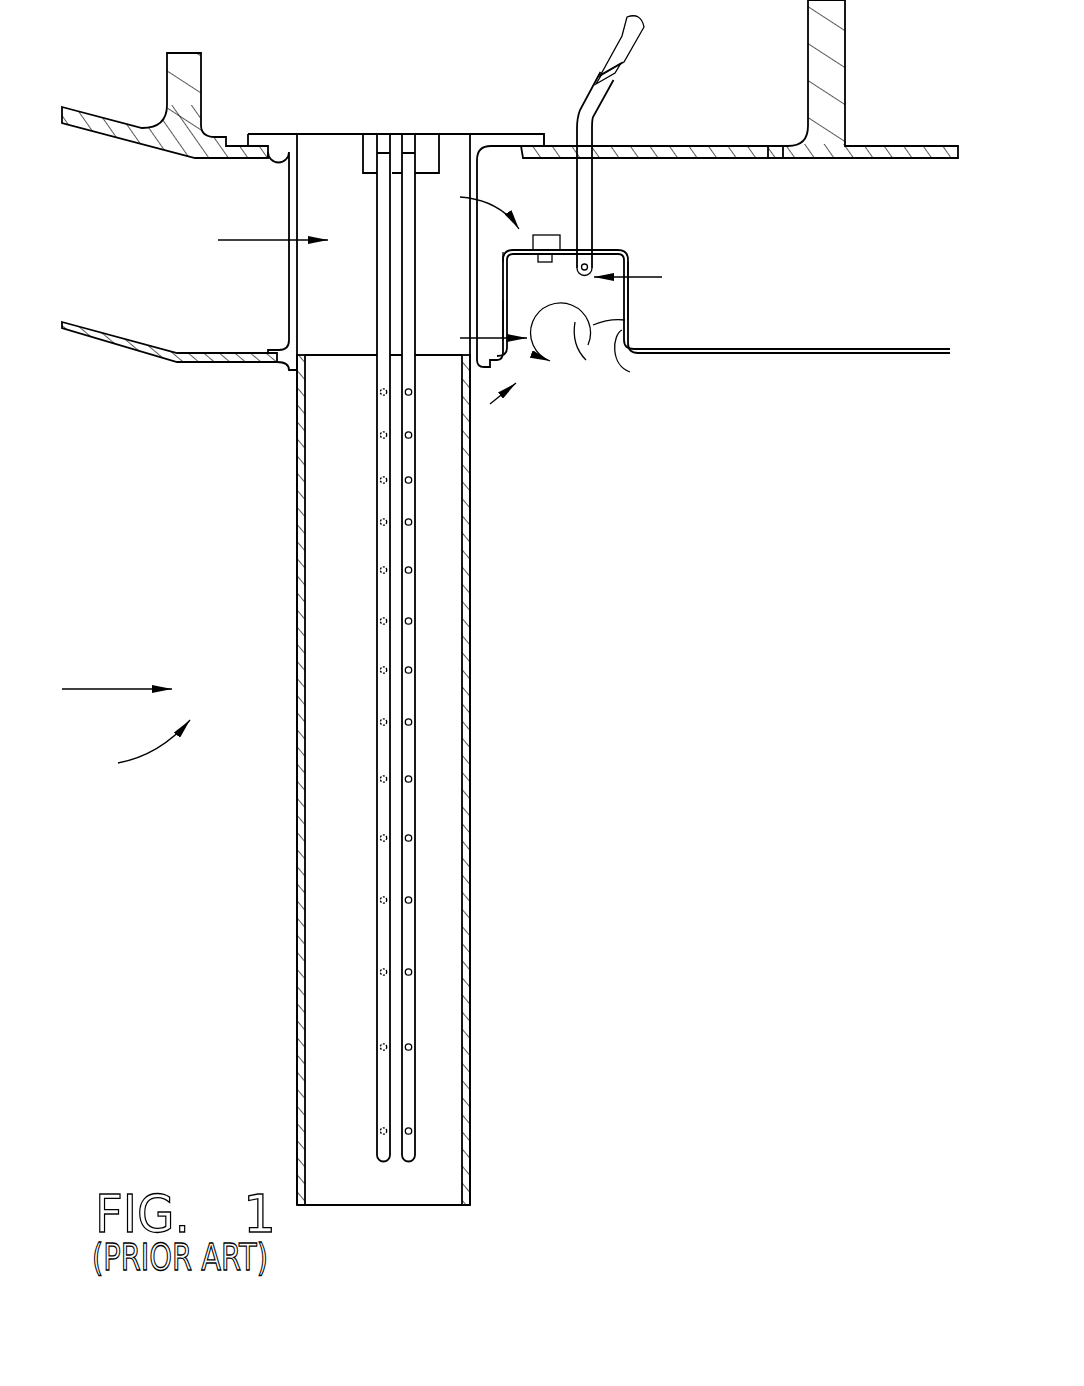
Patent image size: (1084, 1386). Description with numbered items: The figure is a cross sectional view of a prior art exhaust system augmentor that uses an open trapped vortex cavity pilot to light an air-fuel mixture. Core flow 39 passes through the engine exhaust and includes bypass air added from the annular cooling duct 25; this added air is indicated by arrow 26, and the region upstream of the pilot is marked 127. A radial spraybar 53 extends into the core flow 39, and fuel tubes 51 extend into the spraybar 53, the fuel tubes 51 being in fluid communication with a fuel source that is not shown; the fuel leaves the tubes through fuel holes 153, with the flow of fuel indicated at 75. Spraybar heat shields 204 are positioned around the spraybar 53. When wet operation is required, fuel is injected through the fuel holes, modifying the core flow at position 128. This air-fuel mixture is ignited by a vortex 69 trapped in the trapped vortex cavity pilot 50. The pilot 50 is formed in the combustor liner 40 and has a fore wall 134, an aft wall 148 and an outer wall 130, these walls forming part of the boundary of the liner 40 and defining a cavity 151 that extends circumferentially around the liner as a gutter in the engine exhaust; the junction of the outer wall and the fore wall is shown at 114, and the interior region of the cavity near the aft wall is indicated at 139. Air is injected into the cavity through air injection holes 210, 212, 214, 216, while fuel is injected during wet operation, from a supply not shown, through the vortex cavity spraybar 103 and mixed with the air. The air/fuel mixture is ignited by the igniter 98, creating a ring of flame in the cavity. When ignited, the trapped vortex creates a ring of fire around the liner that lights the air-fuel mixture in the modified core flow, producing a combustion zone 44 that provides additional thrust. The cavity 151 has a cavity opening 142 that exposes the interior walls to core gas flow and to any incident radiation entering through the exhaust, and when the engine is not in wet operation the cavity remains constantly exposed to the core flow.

The annular cooling duct 25 is at (113, 242).
The compressed air flow 26 is at (262, 240).
The core flow 39 is at (103, 688).
The combustor liner 40 is at (850, 348).
The combustion zone 44 is at (730, 706).
The trapped vortex cavity pilot 50 is at (471, 206).
The fuel tubes 51 is at (418, 448).
The radial spraybar 53 is at (132, 749).
The vortex 69 is at (625, 320).
The fuel flow 75 is at (410, 393).
The igniter 98 is at (592, 200).
The vortex cavity spraybar 103 is at (577, 178).
The cap boss 114 is at (603, 262).
The head end plenum 127 is at (145, 484).
The position 128 is at (650, 902).
The outer wall 130 is at (600, 249).
The fore wall 134 is at (502, 330).
The recirculation zone 139 is at (630, 372).
The cavity opening 142 is at (558, 375).
The aft wall 148 is at (630, 308).
The cavity 151 is at (575, 322).
The fuel ports 153 is at (410, 522).
The spraybar heat shields 204 is at (470, 662).
The air injection hole 210 is at (498, 352).
The air injection hole 212 is at (505, 252).
The air injection hole 214 is at (635, 275).
The air injection hole 216 is at (630, 273).